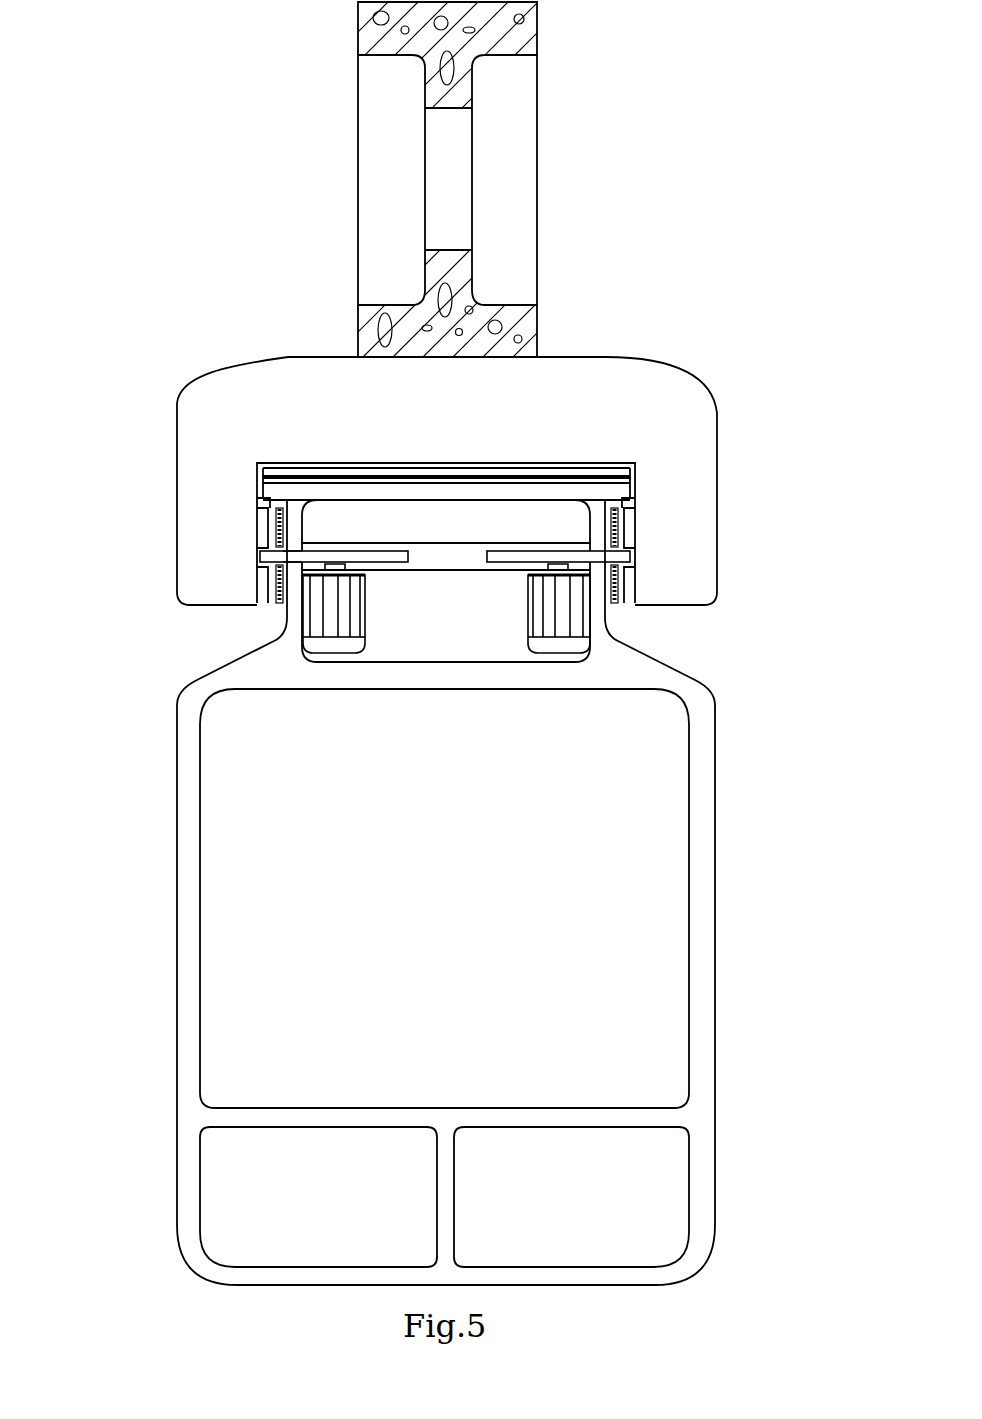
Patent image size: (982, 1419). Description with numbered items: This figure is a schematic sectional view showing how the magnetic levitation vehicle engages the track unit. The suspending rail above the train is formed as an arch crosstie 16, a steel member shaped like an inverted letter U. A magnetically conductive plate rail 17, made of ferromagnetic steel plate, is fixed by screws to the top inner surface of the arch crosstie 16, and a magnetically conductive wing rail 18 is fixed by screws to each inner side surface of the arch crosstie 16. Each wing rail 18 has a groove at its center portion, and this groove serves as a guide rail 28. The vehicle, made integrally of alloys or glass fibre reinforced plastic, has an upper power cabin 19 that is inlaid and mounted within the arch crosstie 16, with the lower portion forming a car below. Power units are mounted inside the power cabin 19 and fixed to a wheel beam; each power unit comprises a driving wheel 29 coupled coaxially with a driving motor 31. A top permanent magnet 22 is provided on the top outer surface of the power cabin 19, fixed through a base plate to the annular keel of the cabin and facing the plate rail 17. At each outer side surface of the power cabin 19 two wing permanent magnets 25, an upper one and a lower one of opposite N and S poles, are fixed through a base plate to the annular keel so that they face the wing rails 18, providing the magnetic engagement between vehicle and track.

The arch crosstie 16 is at (690, 468).
The magnetically conductive plate rail 17 is at (318, 465).
The magnetically conductive wing rail 18 is at (628, 588).
The magnetic levitation power cabin 19 is at (443, 628).
The top permanent magnet 22 is at (565, 478).
The wing permanent magnets 25 is at (617, 597).
The guide rail 28 is at (257, 558).
The driving wheel 29 is at (285, 558).
The driving motor 31 is at (555, 622).